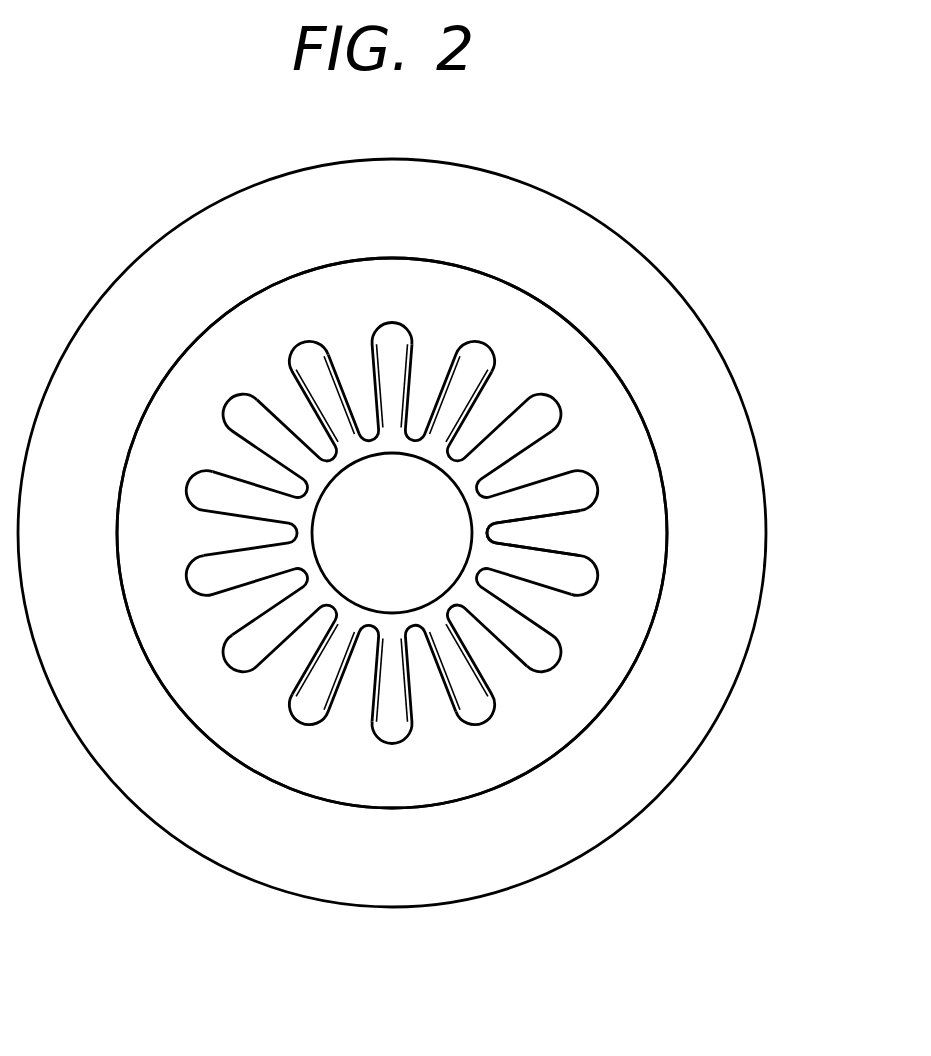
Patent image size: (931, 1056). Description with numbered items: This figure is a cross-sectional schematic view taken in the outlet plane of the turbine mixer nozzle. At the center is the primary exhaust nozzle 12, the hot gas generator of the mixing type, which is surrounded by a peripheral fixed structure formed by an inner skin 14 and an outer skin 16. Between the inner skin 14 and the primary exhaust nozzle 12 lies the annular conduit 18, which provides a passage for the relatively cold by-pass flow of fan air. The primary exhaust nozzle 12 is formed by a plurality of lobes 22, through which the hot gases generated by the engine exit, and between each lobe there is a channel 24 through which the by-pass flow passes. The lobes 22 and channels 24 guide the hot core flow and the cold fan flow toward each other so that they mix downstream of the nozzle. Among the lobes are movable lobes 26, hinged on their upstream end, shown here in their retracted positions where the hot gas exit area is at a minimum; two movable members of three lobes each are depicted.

The primary exhaust nozzle 12 is at (371, 548).
The inner skin 14 is at (618, 376).
The outer skin 16 is at (715, 342).
The annular conduit 18 is at (645, 585).
The lobes 22 is at (545, 434).
The channels 24 is at (517, 536).
The movable lobes 26 is at (303, 340).